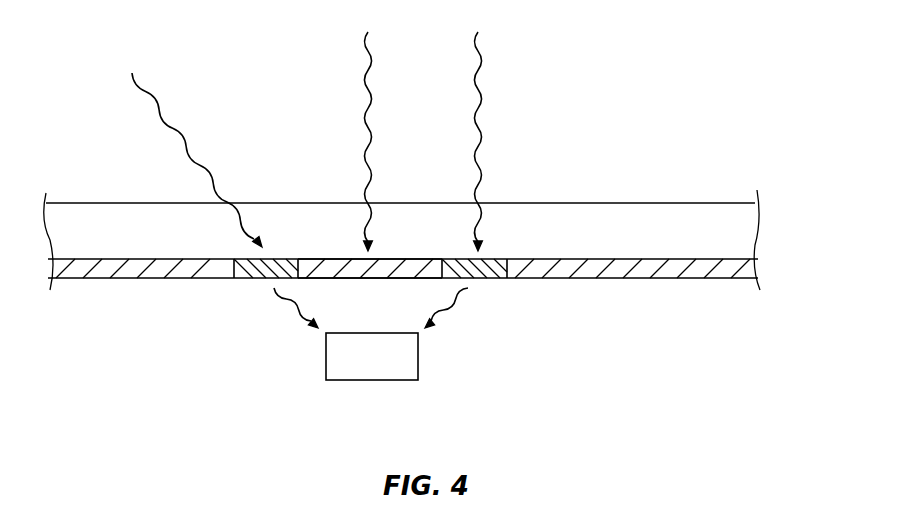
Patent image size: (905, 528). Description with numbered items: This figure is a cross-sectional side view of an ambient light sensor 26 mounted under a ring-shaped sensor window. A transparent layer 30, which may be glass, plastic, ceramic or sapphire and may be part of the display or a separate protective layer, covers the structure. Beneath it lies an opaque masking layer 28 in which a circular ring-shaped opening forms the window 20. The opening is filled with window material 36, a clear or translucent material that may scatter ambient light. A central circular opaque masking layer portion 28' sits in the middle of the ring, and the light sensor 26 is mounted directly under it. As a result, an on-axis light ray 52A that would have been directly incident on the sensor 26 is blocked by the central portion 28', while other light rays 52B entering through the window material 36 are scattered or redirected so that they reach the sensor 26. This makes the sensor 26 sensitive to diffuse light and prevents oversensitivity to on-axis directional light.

The transparent layer 30 is at (668, 212).
The opaque masking layer 28 is at (403, 295).
The central circular opaque masking layer portion 28' is at (370, 201).
The window material 36 is at (247, 277).
The window 20 is at (281, 239).
The ambient light sensor 26 is at (370, 374).
The light ray 52A is at (370, 113).
The light rays 52B is at (182, 140).